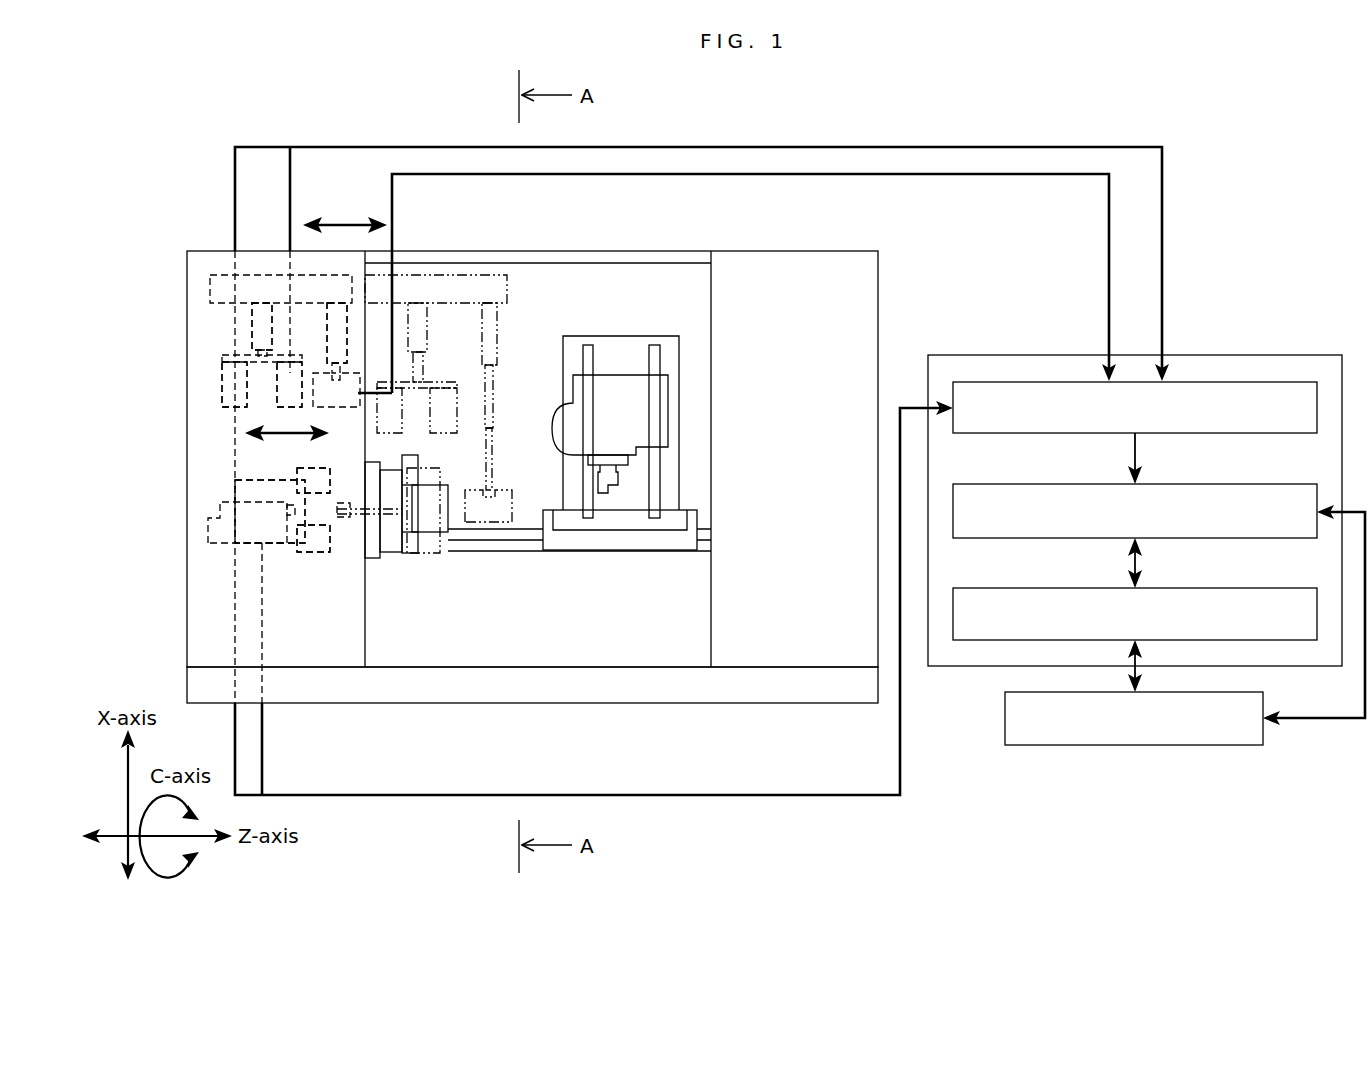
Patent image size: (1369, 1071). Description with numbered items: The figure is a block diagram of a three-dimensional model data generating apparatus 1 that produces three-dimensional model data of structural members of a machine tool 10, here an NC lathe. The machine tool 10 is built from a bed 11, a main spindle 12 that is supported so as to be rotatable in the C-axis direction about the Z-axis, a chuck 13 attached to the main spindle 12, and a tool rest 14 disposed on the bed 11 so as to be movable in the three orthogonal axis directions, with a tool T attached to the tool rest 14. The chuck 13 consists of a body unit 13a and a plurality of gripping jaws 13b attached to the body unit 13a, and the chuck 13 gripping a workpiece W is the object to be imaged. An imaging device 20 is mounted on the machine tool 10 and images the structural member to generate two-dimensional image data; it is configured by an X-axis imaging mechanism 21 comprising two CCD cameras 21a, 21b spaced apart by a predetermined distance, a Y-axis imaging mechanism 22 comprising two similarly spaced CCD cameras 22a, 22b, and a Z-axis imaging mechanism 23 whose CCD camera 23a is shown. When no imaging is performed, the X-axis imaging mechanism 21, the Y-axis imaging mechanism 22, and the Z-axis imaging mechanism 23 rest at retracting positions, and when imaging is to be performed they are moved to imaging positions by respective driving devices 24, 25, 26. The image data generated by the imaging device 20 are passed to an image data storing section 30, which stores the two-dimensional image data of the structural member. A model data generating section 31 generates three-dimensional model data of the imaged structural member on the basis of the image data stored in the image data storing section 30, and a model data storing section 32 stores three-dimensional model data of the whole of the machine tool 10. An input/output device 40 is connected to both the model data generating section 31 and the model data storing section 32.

The three-dimensional model data generating apparatus 1 is at (1146, 512).
The machine tool 10 is at (880, 232).
The bed 11 is at (692, 695).
The main spindle 12 is at (368, 547).
The chuck 13 is at (410, 553).
The body unit 13a is at (393, 546).
The gripping jaws 13b is at (414, 546).
The tool rest 14 is at (658, 411).
The imaging device 20 is at (318, 572).
The X-axis imaging mechanism 21 is at (195, 390).
The CCD camera 21a is at (280, 402).
The CCD camera 21b is at (222, 375).
The Y-axis imaging mechanism 22 is at (305, 570).
The CCD camera 22a is at (312, 472).
The CCD camera 22b is at (308, 552).
The Z-axis imaging mechanism 23 is at (507, 478).
The CCD camera 23a is at (320, 373).
The driving device 24 is at (257, 330).
The driving device 25 is at (212, 520).
The driving device 26 is at (340, 325).
The image data storing section 30 is at (1190, 380).
The model data generating section 31 is at (1190, 484).
The model data storing section 32 is at (1190, 588).
The input/output device 40 is at (1190, 745).
The workpiece W is at (442, 515).
The tool T is at (602, 494).